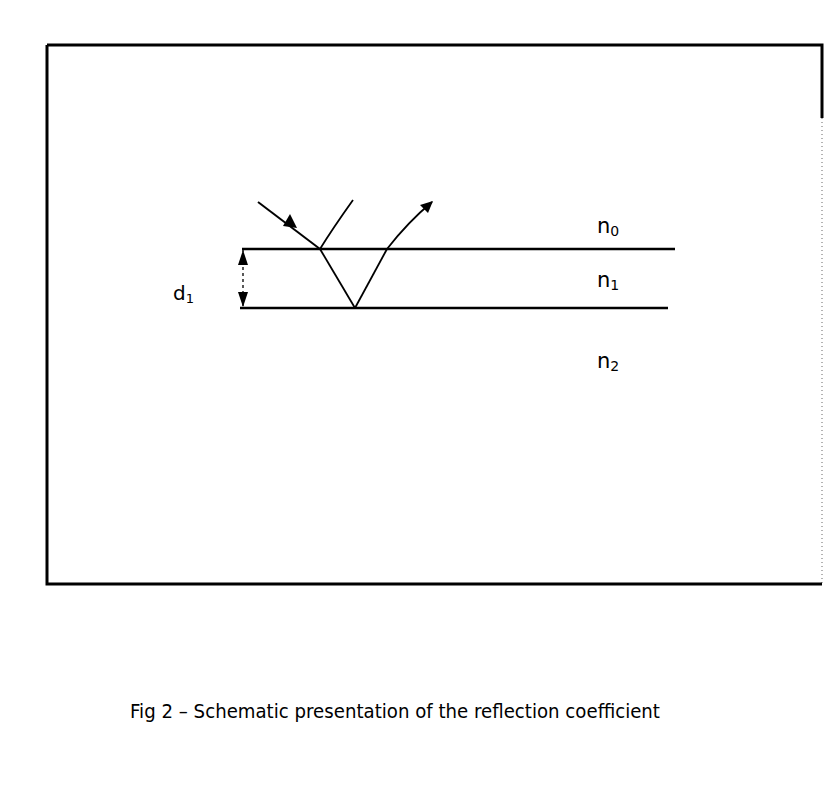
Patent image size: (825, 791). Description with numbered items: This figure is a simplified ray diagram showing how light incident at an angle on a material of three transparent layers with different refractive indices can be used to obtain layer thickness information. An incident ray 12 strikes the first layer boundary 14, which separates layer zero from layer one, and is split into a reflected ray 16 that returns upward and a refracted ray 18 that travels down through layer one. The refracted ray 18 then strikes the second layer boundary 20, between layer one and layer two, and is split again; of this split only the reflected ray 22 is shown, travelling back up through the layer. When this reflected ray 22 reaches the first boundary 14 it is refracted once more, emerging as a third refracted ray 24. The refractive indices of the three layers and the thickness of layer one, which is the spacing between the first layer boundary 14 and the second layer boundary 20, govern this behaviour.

The incident ray 12 is at (237, 195).
The first layer boundary 14 is at (489, 247).
The reflected ray 16 is at (362, 188).
The refracted ray 18 is at (326, 278).
The second layer boundary 20 is at (492, 305).
The reflected ray 22 is at (388, 278).
The third refracted ray 24 is at (518, 190).